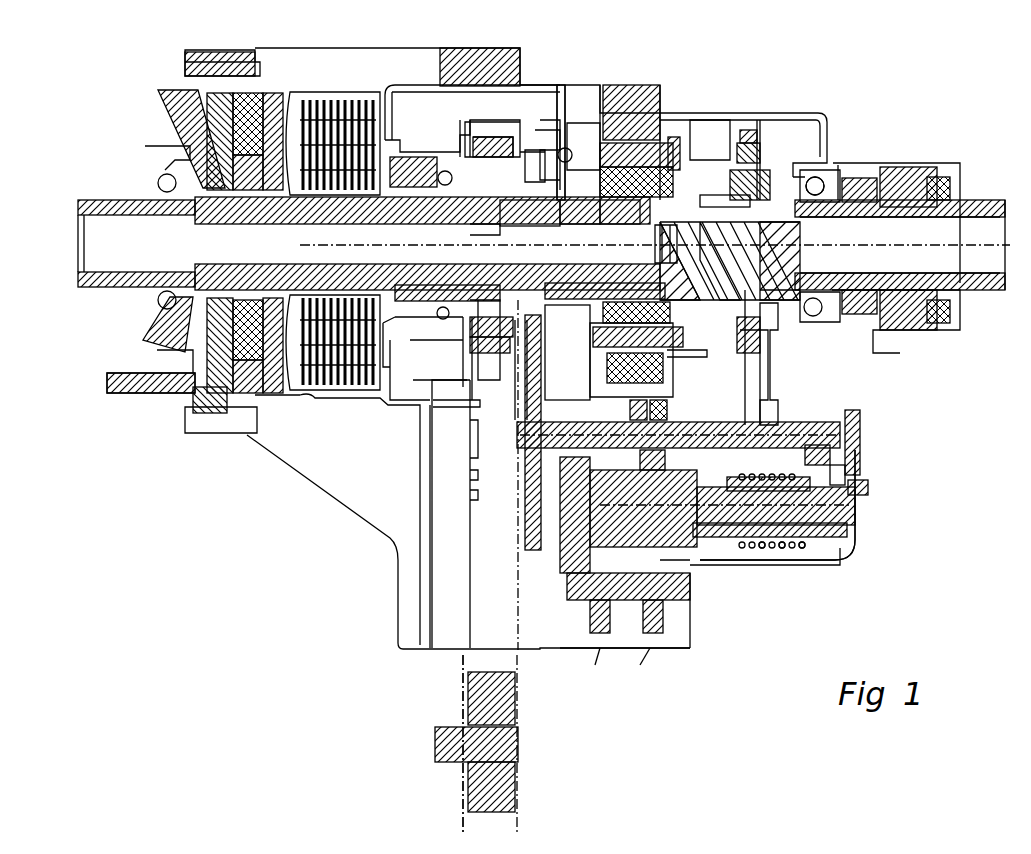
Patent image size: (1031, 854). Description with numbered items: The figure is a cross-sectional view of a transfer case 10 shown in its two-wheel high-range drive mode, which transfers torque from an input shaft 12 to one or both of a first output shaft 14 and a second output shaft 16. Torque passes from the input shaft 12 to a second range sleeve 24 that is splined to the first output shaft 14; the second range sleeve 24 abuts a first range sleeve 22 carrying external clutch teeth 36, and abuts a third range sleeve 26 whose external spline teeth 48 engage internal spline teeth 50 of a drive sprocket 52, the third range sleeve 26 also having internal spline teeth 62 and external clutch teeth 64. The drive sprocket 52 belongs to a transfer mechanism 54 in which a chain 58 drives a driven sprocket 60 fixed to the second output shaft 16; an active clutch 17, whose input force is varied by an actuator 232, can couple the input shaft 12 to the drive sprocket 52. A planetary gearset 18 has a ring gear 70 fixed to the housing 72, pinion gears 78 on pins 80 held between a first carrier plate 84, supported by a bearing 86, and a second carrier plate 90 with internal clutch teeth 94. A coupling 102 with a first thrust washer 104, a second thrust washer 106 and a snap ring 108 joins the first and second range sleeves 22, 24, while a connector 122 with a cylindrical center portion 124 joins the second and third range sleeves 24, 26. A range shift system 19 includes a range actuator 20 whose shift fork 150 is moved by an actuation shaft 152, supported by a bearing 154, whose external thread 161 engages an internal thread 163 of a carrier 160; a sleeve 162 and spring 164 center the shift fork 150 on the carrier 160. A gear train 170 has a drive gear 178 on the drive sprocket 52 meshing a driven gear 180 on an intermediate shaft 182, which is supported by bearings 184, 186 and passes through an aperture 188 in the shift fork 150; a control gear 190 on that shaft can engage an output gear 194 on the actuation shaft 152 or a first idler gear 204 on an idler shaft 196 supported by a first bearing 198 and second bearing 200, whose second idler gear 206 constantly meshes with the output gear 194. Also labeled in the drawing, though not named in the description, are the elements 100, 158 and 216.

The transfer case 10 is at (902, 118).
The input shaft 12 is at (100, 202).
The first output shaft 14 is at (985, 205).
The second output shaft 16 is at (445, 742).
The active clutch 17 is at (322, 400).
The planetary gearset 18 is at (626, 85).
The range shift system 19 is at (790, 385).
The range actuator 20 is at (718, 565).
The first range sleeve 22 is at (760, 157).
The second range sleeve 24 is at (722, 205).
The third range sleeve 26 is at (560, 222).
The external clutch teeth 36 is at (800, 178).
The external spline teeth 48 is at (540, 225).
The internal spline teeth 50 is at (490, 226).
The drive sprocket 52 is at (498, 340).
The transfer mechanism 54 is at (470, 112).
The chain 58 is at (445, 695).
The driven sprocket 60 is at (520, 705).
The internal spline teeth 62 is at (652, 235).
The external clutch teeth 64 is at (620, 215).
The ring gear 70 is at (620, 95).
The housing 72 is at (648, 90).
The pinion gears 78 is at (668, 110).
The pins 80 is at (590, 205).
The first carrier plate 84 is at (563, 85).
The bearing 86 is at (572, 92).
The second carrier plate 90 is at (705, 140).
The internal clutch teeth 94 is at (733, 125).
The bearing 100 is at (545, 292).
The coupling 102 is at (748, 130).
The first thrust washer 104 is at (755, 230).
The second thrust washer 106 is at (730, 238).
The snap ring 108 is at (685, 240).
The connector 122 is at (675, 135).
The center portion 124 is at (680, 300).
The shift fork 150 is at (778, 372).
The actuation shaft 152 is at (850, 520).
The bearing 154 is at (565, 505).
The ring 158 is at (855, 475).
The carrier 160 is at (820, 560).
The external thread 161 is at (818, 475).
The sleeve 162 is at (745, 550).
The internal thread 163 is at (850, 548).
The spring 164 is at (775, 555).
The gear train 170 is at (618, 648).
The drive gear 178 is at (533, 160).
The driven gear 180 is at (533, 550).
The intermediate shaft 182 is at (732, 420).
The bearing 184 is at (517, 435).
The bearing 186 is at (865, 415).
The aperture 188 is at (780, 425).
The control gear 190 is at (628, 404).
The output gear 194 is at (660, 470).
The idler shaft 196 is at (690, 600).
The first bearing 198 is at (565, 590).
The second bearing 200 is at (690, 570).
The first idler gear 204 is at (655, 648).
The second idler gear 206 is at (600, 648).
The seal 216 is at (668, 405).
The actuator 232 is at (263, 148).